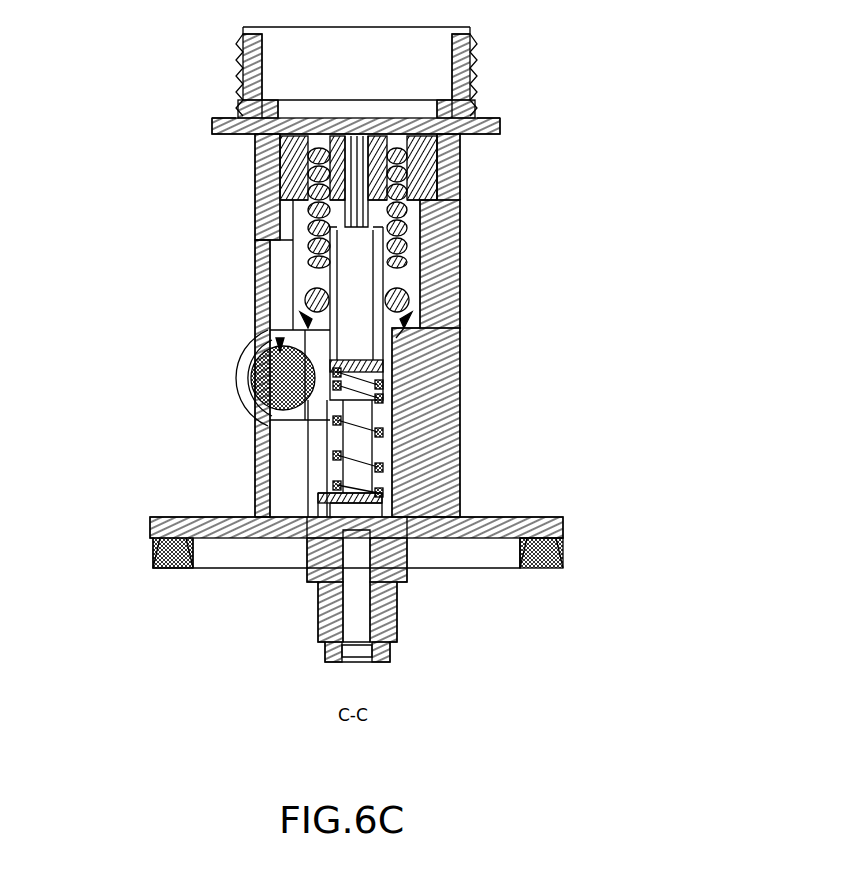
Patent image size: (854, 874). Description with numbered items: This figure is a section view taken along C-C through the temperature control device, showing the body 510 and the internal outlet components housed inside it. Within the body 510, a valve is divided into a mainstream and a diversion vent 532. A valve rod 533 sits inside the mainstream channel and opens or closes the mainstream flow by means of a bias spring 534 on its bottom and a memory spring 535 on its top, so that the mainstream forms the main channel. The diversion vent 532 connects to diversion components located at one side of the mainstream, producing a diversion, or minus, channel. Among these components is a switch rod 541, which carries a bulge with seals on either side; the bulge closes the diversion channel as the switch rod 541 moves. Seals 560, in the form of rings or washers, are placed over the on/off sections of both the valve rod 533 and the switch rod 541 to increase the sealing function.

The body 510 is at (482, 100).
The diversion vent 532 is at (305, 285).
The valve rod 533 is at (393, 357).
The bias spring 534 is at (453, 420).
The memory spring 535 is at (410, 220).
The switch rod 541 is at (237, 400).
The seals 560 is at (420, 322).